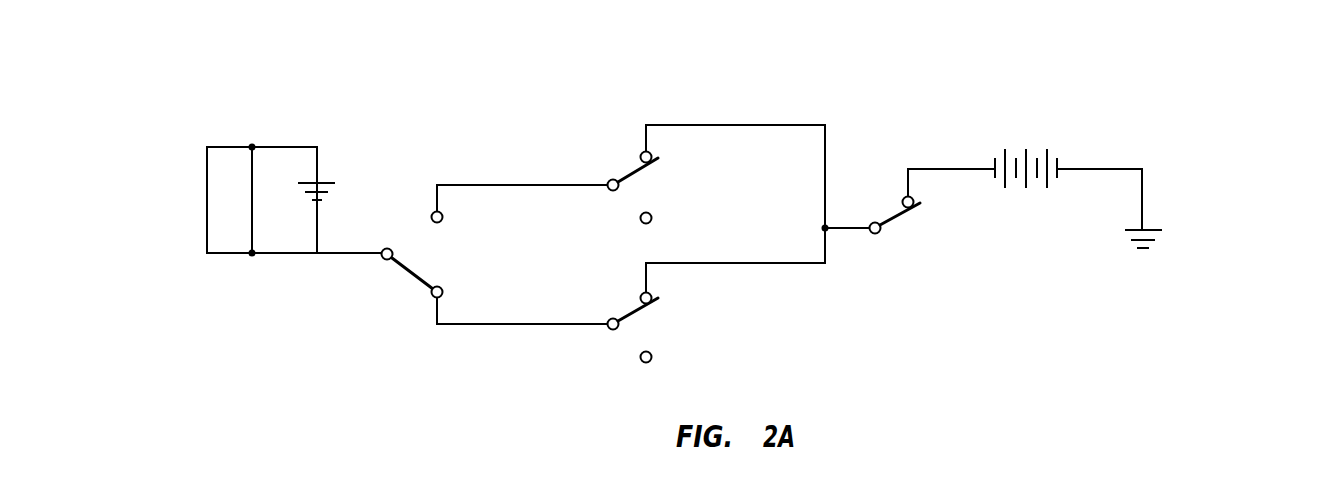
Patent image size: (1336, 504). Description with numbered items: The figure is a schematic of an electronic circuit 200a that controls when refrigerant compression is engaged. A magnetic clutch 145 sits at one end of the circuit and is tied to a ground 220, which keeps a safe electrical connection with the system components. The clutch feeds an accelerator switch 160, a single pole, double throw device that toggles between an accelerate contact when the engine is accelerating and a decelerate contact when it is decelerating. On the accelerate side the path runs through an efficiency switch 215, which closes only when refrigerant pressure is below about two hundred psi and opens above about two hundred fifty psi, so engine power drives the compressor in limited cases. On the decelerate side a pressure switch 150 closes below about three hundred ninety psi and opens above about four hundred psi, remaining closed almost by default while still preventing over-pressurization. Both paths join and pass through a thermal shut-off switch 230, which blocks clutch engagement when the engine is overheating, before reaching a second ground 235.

The electronic circuit 200a is at (395, 86).
The magnetic clutch 145 is at (193, 196).
The ground 220 is at (328, 178).
The accelerator switch 160 is at (422, 295).
The efficiency switch 215 is at (602, 157).
The pressure switch 150 is at (660, 318).
The thermal shut-off switch 230 is at (892, 207).
The ground 235 is at (1157, 225).